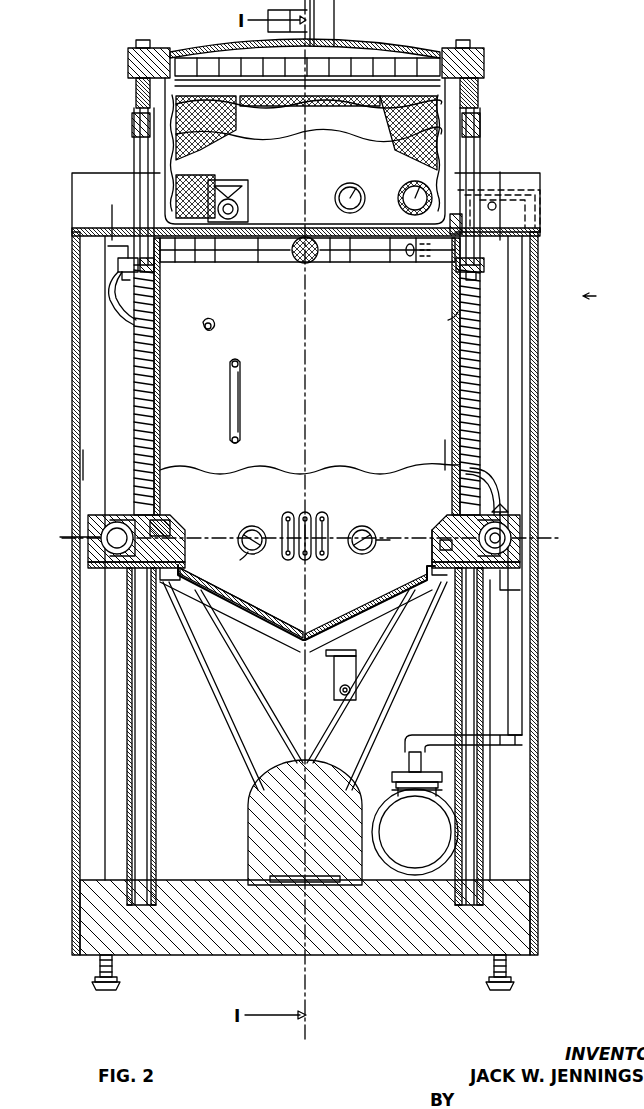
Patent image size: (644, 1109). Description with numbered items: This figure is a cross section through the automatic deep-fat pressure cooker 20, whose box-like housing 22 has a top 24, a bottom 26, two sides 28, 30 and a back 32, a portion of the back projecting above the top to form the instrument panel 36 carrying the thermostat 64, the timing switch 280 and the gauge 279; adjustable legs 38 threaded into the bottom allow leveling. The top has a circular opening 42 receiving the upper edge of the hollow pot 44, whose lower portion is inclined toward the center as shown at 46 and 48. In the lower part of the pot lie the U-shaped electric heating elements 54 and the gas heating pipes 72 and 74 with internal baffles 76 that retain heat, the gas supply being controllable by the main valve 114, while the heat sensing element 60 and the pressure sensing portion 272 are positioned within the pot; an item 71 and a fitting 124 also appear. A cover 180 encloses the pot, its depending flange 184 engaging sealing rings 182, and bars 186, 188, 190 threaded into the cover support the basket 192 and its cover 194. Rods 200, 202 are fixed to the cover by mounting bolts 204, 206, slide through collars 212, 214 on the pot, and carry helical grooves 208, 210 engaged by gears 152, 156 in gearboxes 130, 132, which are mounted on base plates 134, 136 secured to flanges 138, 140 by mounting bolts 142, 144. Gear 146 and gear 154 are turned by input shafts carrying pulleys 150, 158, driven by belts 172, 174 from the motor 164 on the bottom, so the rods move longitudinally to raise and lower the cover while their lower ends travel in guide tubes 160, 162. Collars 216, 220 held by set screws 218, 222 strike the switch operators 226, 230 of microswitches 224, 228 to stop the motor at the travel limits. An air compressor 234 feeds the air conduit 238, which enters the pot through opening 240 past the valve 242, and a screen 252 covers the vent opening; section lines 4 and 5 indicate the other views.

The section line 4- 4 is at (265, 450).
The section line 5- 5 is at (302, 192).
The automatic deep-fat pressure cooker 20 is at (602, 296).
The housing 22 is at (538, 398).
The top 24 is at (540, 236).
The bottom 26 is at (535, 925).
The side 28 is at (72, 432).
The side 30 is at (538, 426).
The back 32 is at (90, 776).
The instrument panel 36 is at (72, 207).
The legs 38 is at (118, 984).
The opening 42 is at (258, 262).
The pot 44 is at (452, 390).
The inclined lower portion 46 is at (236, 610).
The inclined lower portion 48 is at (372, 602).
The heating elements 54 is at (316, 502).
The heat sensing element 60 is at (242, 398).
The thermostat 64 is at (224, 186).
The pipe 71 is at (404, 530).
The gas heating pipe 72 is at (252, 526).
The gas heating pipe 74 is at (362, 526).
The baffles 76 is at (235, 563).
The main valve 114 is at (352, 652).
The inlet pipe 124 is at (336, 16).
The gearbox 130 is at (88, 550).
The gearbox 132 is at (520, 552).
The base plate 134 is at (94, 566).
The base plate 136 is at (520, 590).
The flange 138 is at (156, 618).
The flange 140 is at (444, 545).
The mounting bolts 142 is at (178, 570).
The mounting bolts 144 is at (412, 620).
The gear 146 is at (112, 524).
The pulley 150 is at (56, 536).
The gear 152 is at (166, 522).
The gear 154 is at (520, 566).
The gear 156 is at (500, 522).
The pulley 158 is at (510, 540).
The guide tube 160 is at (156, 830).
The guide tube 162 is at (406, 870).
The motor 164 is at (262, 852).
The drive belt 172 is at (232, 736).
The belt 174 is at (380, 676).
The cover 180 is at (250, 50).
The sealing rings 182 is at (462, 220).
The depending flange 184 is at (136, 92).
The bar 186 is at (172, 146).
The bar 188 is at (392, 60).
The bar 190 is at (436, 156).
The basket 192 is at (480, 130).
The cover 194 is at (478, 95).
The rod 200 is at (132, 122).
The rod 202 is at (480, 175).
The mounting bolt 204 is at (138, 46).
The mounting bolt 206 is at (470, 46).
The helical groove 208 is at (156, 372).
The helical groove 210 is at (478, 326).
The collar 212 is at (72, 232).
The collar 214 is at (484, 262).
The collar 216 is at (154, 290).
The set screw 218 is at (154, 270).
The collar 220 is at (464, 280).
The set screw 222 is at (431, 316).
The microswitch 224 is at (118, 274).
The switch operator 226 is at (125, 256).
The microswitch 228 is at (505, 512).
The switch operator 230 is at (464, 478).
The air compressor 234 is at (272, 882).
The air conduit 238 is at (524, 688).
The opening 240 is at (410, 262).
The valve 242 is at (530, 200).
The screen 252 is at (310, 262).
The pressure sensing portion 272 is at (214, 328).
The gauge 279 is at (335, 200).
The timing switch 280 is at (406, 180).